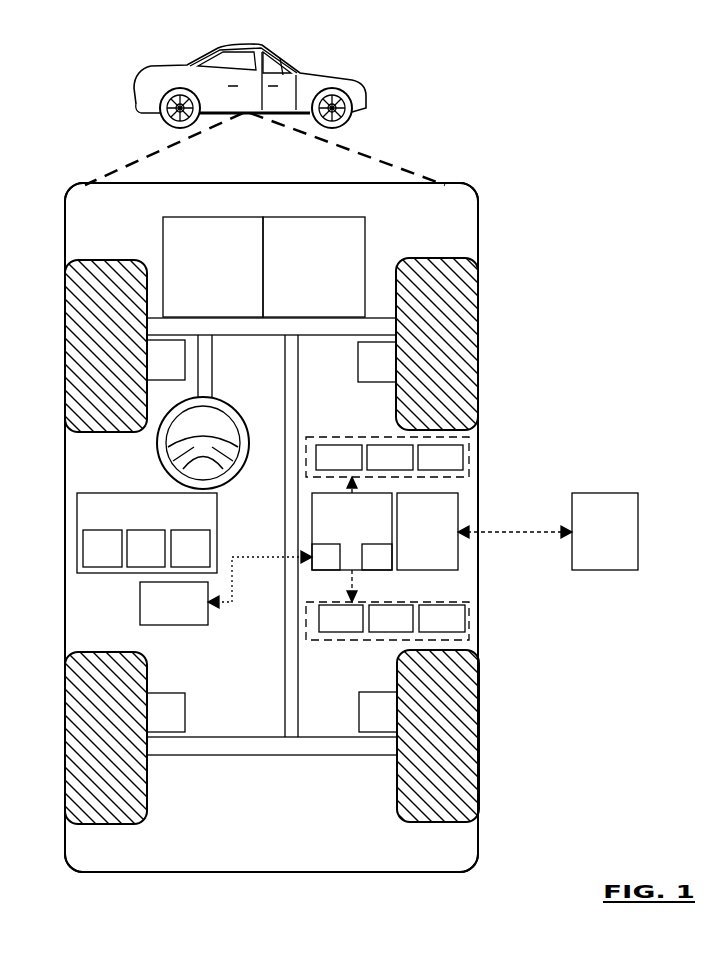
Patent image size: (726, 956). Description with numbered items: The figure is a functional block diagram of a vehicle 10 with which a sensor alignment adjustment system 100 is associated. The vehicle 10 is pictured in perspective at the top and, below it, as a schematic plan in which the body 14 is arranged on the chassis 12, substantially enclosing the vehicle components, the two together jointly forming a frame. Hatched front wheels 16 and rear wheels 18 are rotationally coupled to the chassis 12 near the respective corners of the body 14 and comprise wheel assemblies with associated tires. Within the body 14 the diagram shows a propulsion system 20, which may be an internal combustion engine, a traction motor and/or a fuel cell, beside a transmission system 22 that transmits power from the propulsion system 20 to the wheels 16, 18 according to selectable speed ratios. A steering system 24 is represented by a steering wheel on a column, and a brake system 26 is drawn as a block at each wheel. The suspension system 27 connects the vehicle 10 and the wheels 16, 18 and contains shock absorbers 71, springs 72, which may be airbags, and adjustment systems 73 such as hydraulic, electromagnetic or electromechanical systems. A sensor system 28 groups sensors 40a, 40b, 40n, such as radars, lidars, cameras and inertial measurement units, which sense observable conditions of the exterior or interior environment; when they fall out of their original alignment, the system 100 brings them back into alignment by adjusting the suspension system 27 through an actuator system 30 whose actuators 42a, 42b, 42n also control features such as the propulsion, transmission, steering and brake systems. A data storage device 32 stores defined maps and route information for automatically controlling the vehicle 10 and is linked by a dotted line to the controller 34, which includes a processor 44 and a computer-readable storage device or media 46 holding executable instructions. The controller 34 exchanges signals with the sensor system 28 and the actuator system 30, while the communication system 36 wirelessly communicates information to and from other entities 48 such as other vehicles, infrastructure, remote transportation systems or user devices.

The vehicle 10 is at (134, 103).
The sensor alignment adjustment system 100 is at (504, 190).
The body 14 is at (65, 512).
The chassis 12 is at (285, 665).
The front wheels 16 is at (104, 261).
The rear wheels 18 is at (120, 825).
The propulsion system 20 is at (202, 280).
The transmission system 22 is at (303, 280).
The steering system 24 is at (237, 358).
The brake system 26 is at (155, 370).
The suspension system 27 is at (136, 523).
The shock absorbers 71 is at (91, 559).
The springs 72 is at (135, 559).
The adjustment systems 73 is at (179, 559).
The sensor system 28 is at (314, 437).
The sensor 40a is at (323, 467).
The sensor 40b is at (374, 467).
The sensor 40n is at (424, 467).
The actuator system 30 is at (350, 641).
The actuator 42a is at (325, 628).
The actuator 42b is at (375, 628).
The actuator 42n is at (426, 628).
The data storage device 32 is at (163, 613).
The controller 34 is at (341, 541).
The processor 44 is at (315, 566).
The computer-readable storage device or media 46 is at (366, 566).
The communication system 36 is at (417, 541).
The other entities 48 is at (594, 541).